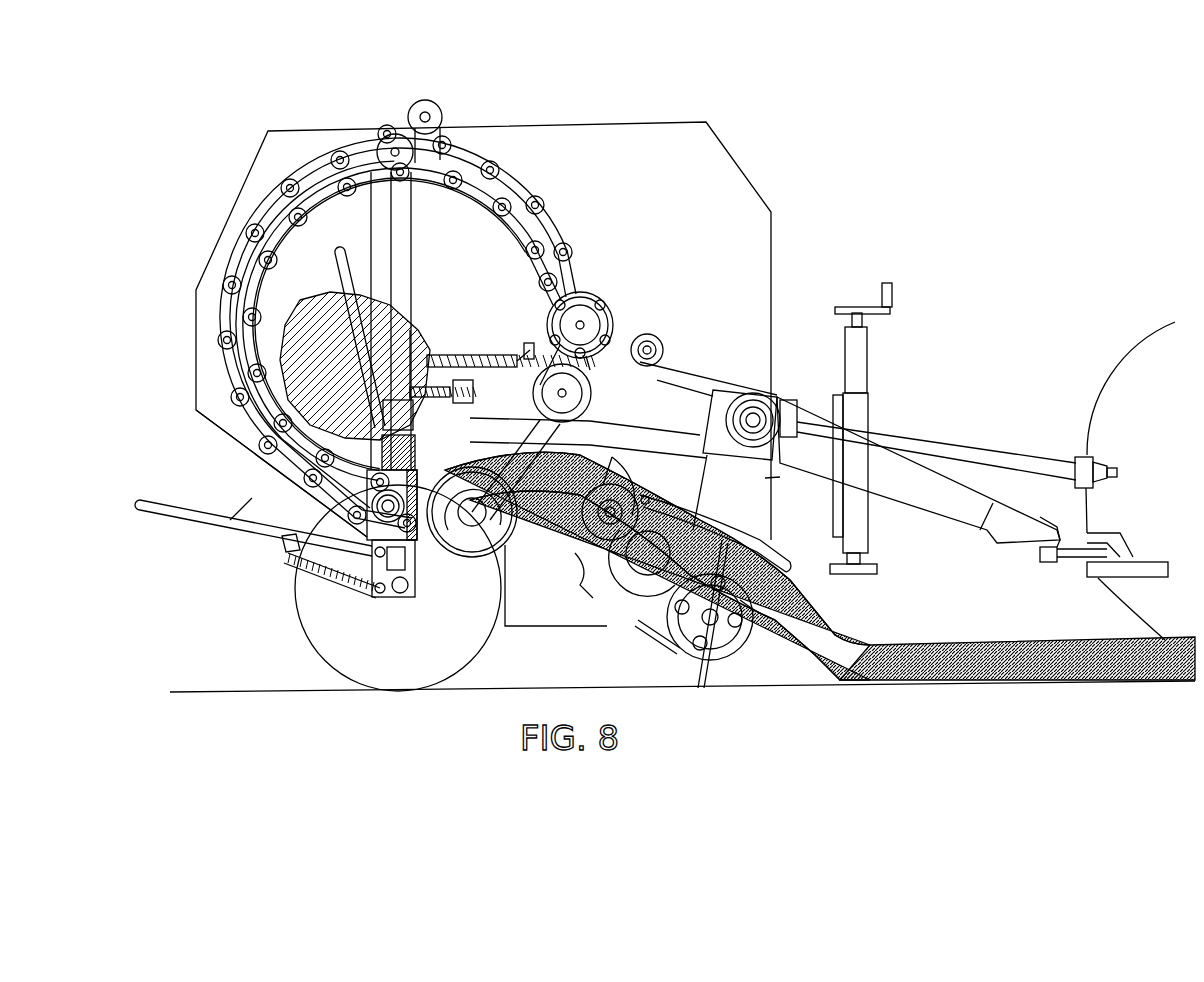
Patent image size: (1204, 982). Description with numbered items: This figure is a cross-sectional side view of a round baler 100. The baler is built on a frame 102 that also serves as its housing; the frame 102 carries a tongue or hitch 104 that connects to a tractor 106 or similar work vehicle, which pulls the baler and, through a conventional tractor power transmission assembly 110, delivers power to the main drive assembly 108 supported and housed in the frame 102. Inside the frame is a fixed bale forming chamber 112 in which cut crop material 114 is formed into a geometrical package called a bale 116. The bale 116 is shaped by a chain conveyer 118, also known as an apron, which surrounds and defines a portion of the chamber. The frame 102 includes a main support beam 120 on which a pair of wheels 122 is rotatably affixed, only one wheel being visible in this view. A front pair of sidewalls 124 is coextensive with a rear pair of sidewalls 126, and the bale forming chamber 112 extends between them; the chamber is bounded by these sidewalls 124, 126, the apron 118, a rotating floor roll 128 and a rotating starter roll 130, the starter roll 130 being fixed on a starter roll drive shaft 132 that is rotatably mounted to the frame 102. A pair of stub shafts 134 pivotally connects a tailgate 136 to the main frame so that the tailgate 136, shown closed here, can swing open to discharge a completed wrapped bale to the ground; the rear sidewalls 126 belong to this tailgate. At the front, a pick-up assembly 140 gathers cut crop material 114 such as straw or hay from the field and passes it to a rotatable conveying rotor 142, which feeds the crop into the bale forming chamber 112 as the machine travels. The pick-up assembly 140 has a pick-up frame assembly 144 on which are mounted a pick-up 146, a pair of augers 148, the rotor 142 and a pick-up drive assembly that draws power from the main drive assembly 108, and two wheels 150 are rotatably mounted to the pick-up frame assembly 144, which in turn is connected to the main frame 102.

The round baler 100 is at (802, 180).
The frame 102 is at (212, 527).
The tongue or hitch 104 is at (930, 502).
The tractor 106 is at (1135, 342).
The main drive assembly 108 is at (645, 334).
The tractor power transmission assembly 110 is at (990, 457).
The bale forming chamber 112 is at (483, 264).
The cut crop material 114 is at (1007, 637).
The bale 116 is at (282, 359).
The chain conveyer 118 is at (303, 242).
The main support beam 120 is at (300, 597).
The wheels 122 is at (300, 622).
The front pair of sidewalls 124 is at (590, 164).
The rear pair of sidewalls 126 is at (305, 165).
The rotating floor roll 128 is at (462, 560).
The rotating starter roll 130 is at (597, 383).
The starter roll drive shaft 132 is at (608, 488).
The stub shafts 134 is at (410, 122).
The tailgate 136 is at (243, 460).
The pick-up assembly 140 is at (740, 665).
The rotatable conveying rotor 142 is at (612, 490).
The pick-up frame assembly 144 is at (537, 620).
The pick-up 146 is at (690, 645).
The augers 148 is at (637, 593).
The wheels 150 is at (780, 670).